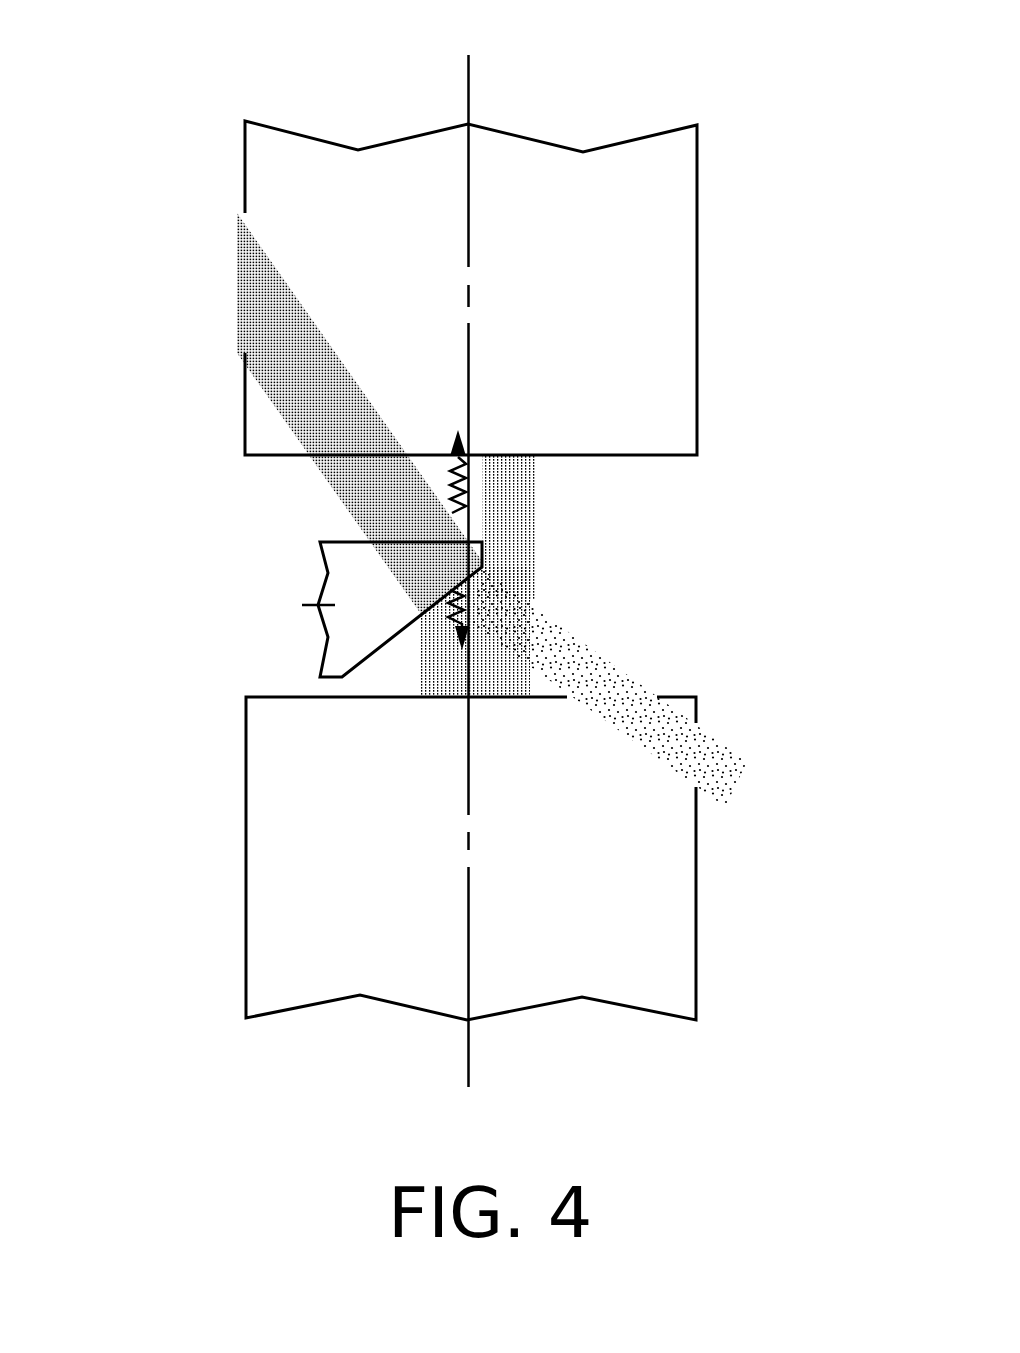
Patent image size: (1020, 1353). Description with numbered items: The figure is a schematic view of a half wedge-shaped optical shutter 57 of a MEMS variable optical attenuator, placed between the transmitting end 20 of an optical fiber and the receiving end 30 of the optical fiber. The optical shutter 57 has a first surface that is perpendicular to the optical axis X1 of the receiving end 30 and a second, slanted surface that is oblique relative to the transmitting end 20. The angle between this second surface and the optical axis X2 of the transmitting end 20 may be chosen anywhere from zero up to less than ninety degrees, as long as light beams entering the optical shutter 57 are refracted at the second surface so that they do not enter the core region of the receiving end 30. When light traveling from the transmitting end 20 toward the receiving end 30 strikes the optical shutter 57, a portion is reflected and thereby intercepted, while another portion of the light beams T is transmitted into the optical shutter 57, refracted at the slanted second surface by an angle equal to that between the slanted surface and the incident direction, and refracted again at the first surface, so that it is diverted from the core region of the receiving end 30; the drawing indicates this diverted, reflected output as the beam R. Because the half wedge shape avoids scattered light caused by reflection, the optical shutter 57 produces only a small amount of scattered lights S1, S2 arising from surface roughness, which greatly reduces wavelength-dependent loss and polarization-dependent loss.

The transmitting end of the optical fiber 20 is at (270, 863).
The receiving end of the optical fiber 30 is at (678, 220).
The optical shutter 57 is at (333, 603).
The transmitted light beams T is at (352, 478).
The scattered lights S1 is at (470, 483).
The scattered lights S2 is at (467, 610).
The reflected light beam R is at (602, 667).
The optical axis of the receiving end X1 is at (472, 350).
The optical axis of the transmitting end X2 is at (469, 925).